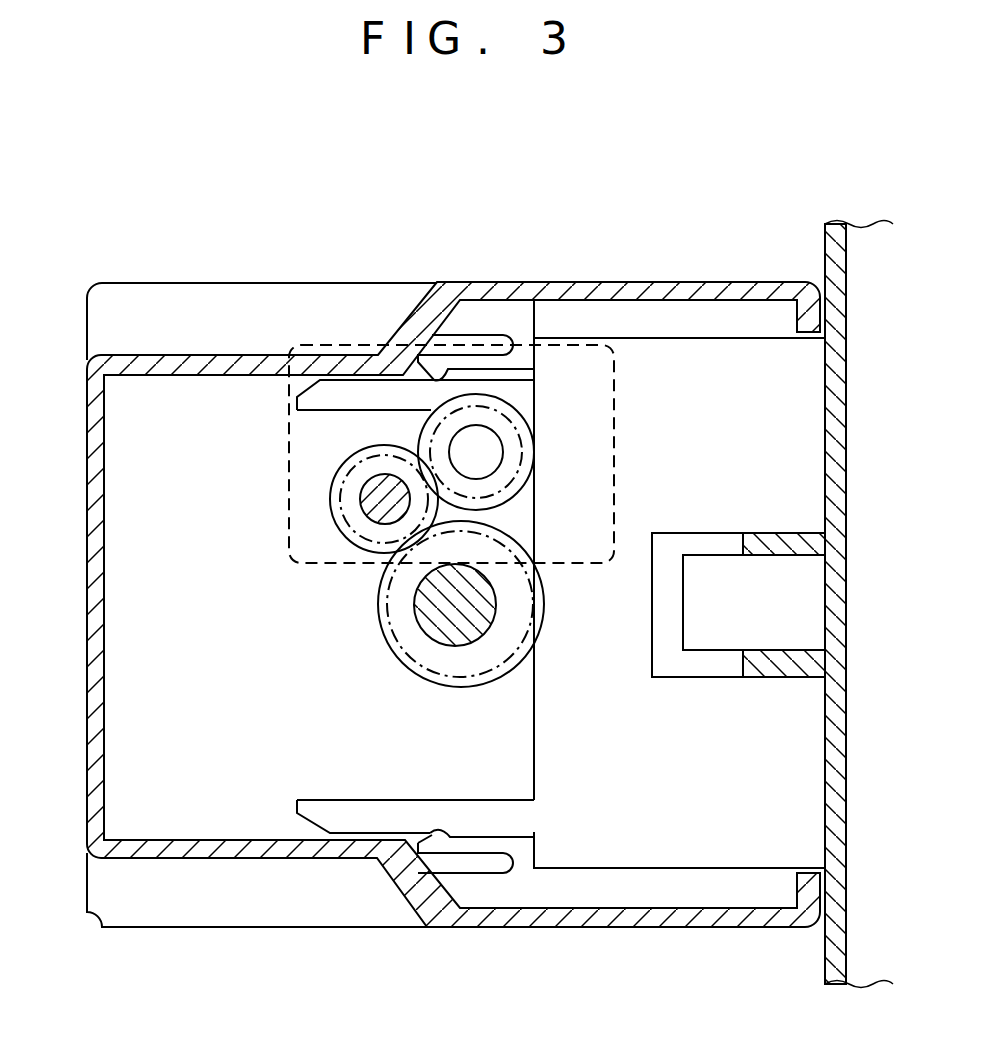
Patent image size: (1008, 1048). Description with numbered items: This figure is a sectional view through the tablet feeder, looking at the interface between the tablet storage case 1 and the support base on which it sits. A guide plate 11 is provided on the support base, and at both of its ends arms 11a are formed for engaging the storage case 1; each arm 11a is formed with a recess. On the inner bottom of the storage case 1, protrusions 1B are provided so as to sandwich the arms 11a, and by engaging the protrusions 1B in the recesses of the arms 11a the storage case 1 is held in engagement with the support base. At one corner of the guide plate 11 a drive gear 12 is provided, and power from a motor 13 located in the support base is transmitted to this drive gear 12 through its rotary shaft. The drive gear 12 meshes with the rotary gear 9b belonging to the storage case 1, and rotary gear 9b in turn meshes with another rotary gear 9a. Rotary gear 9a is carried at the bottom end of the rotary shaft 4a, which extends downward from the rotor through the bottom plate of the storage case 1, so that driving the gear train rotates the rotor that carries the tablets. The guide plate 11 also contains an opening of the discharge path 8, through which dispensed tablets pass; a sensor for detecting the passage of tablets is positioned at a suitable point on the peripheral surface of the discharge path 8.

The tablet storage case 1 is at (601, 276).
The protrusions 1B is at (438, 372).
The guide plate 11 is at (660, 842).
The arms 11a is at (340, 392).
The motor 13 is at (617, 352).
The drive gear 12 is at (536, 452).
The rotary gear 9b is at (333, 497).
The rotary gear 9a is at (378, 628).
The rotary shaft 4a is at (448, 614).
The discharge path 8 is at (797, 603).